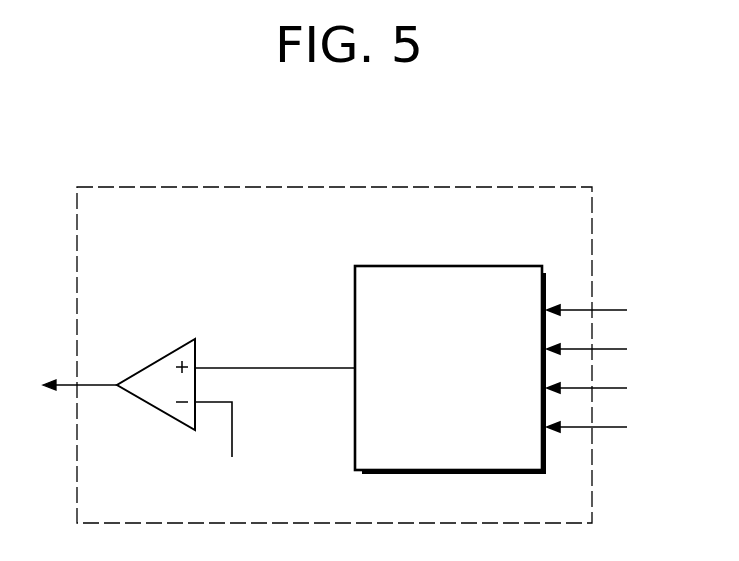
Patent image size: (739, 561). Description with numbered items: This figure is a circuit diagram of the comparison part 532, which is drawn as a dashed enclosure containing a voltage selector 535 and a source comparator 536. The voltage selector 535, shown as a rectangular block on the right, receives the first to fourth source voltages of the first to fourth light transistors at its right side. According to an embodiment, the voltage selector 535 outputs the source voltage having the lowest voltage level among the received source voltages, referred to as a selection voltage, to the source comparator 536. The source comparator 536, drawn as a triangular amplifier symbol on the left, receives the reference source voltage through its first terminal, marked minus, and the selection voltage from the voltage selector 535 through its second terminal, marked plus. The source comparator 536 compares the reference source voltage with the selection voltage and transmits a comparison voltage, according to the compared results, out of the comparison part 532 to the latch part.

The comparison part 532 is at (610, 143).
The voltage selector 535 is at (483, 266).
The source comparator 536 is at (178, 345).